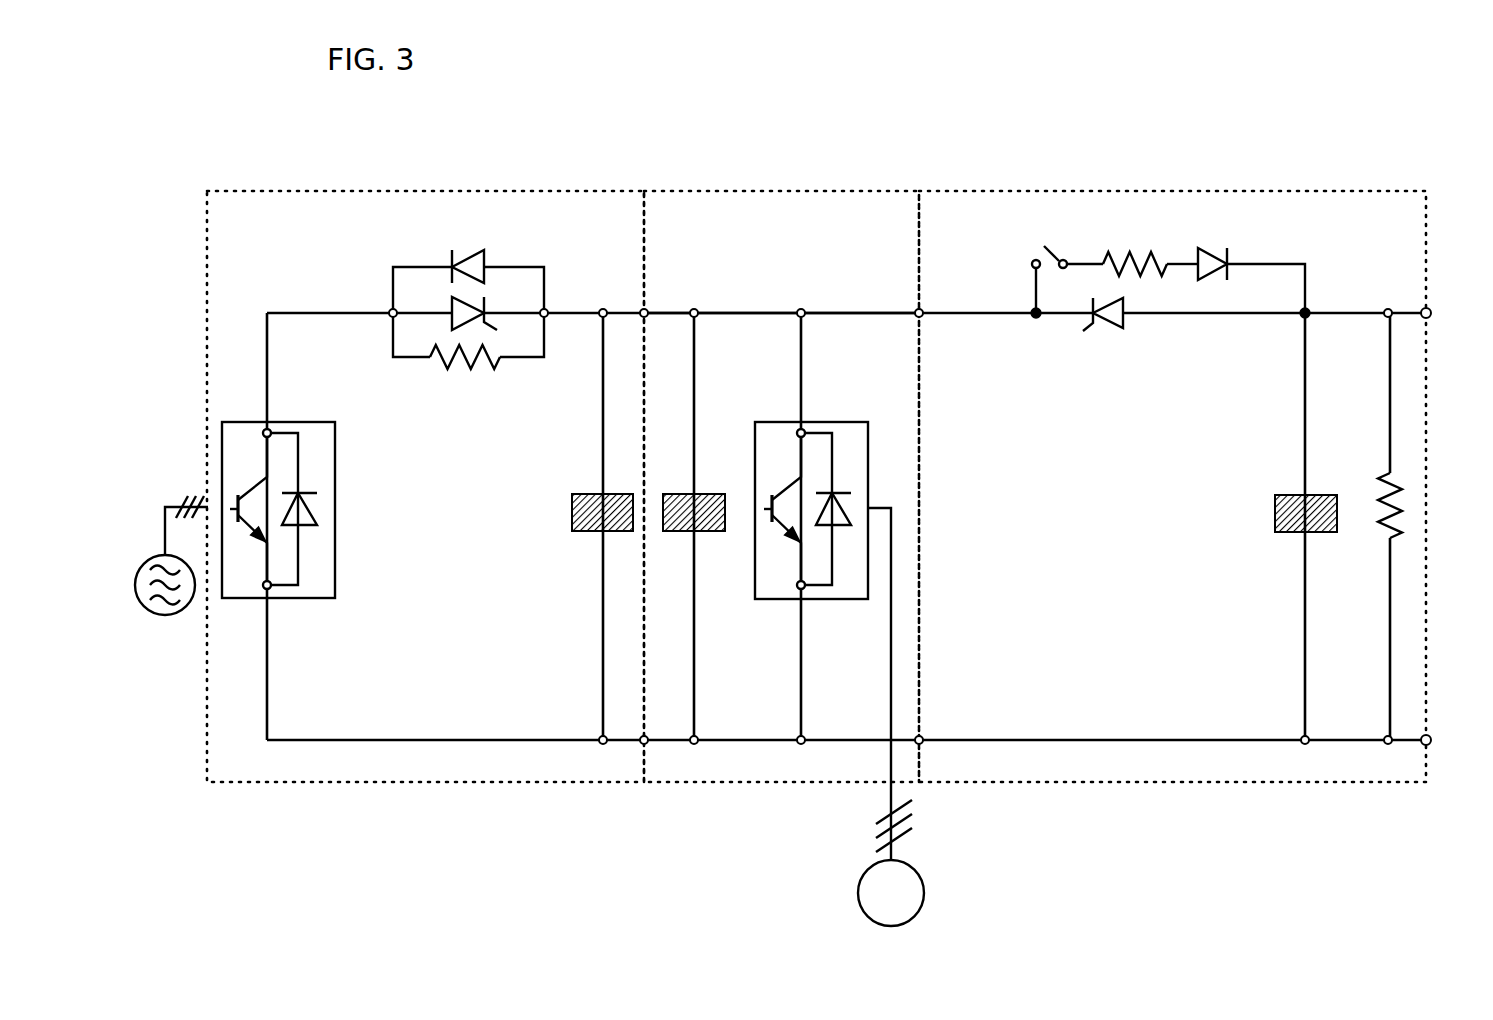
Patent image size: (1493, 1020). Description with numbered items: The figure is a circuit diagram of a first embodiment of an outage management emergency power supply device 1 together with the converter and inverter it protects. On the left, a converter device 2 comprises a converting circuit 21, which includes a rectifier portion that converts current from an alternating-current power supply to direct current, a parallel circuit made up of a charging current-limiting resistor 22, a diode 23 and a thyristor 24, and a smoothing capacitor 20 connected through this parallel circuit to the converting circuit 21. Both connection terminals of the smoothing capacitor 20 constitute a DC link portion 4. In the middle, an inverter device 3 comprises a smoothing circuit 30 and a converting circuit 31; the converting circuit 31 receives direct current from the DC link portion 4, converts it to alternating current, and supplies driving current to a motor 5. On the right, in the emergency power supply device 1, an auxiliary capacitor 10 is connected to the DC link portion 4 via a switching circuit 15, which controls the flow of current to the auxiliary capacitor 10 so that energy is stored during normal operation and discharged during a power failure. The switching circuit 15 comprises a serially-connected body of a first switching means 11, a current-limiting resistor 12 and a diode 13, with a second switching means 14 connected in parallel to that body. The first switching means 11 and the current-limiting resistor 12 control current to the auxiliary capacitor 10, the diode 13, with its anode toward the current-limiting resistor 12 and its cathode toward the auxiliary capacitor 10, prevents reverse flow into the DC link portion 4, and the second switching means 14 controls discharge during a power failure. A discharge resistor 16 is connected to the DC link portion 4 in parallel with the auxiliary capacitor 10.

The emergency power supply device 1 is at (1330, 203).
The converter device 2 is at (440, 197).
The inverter device 3 is at (813, 198).
The DC link portion 4 is at (847, 310).
The motor 5 is at (925, 897).
The auxiliary capacitor 10 is at (1292, 533).
The first switching means 11 is at (1053, 235).
The current-limiting resistor 12 is at (1123, 242).
The diode 13 is at (1210, 247).
The second switching means 14 is at (1098, 338).
The switching circuit 15 is at (1122, 396).
The discharge resistor 16 is at (1400, 520).
The smoothing capacitor 20 is at (593, 533).
The converting circuit 21 is at (337, 512).
The charging current-limiting resistor 22 is at (473, 380).
The diode 23 is at (470, 247).
The thyristor 24 is at (500, 305).
The smoothing circuit 30 is at (717, 533).
The converting circuit 31 is at (837, 593).